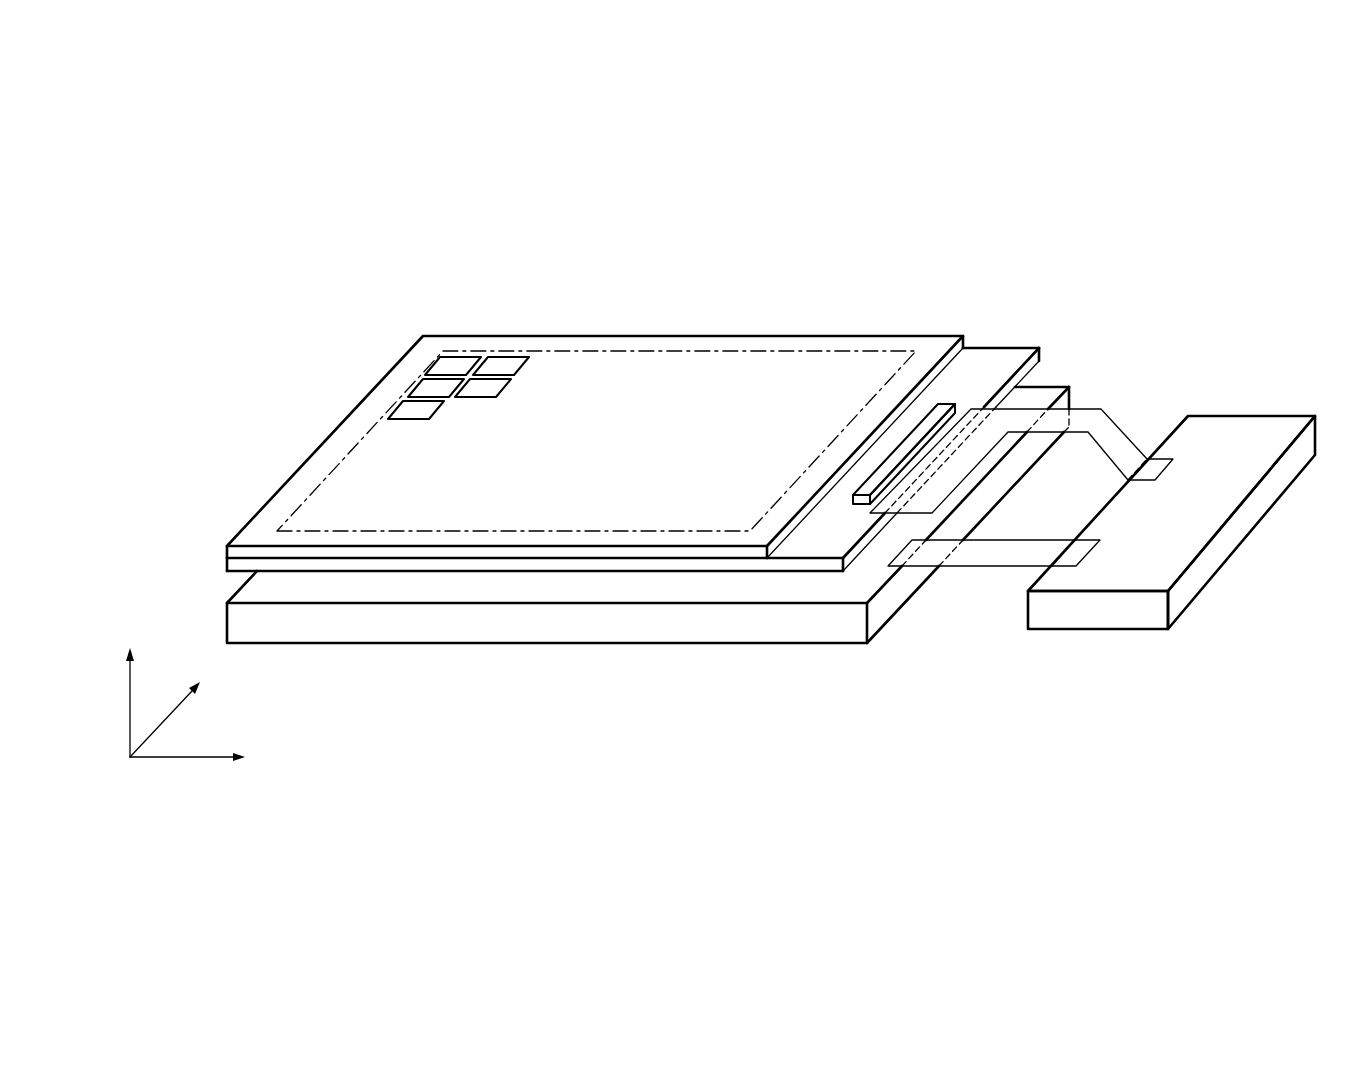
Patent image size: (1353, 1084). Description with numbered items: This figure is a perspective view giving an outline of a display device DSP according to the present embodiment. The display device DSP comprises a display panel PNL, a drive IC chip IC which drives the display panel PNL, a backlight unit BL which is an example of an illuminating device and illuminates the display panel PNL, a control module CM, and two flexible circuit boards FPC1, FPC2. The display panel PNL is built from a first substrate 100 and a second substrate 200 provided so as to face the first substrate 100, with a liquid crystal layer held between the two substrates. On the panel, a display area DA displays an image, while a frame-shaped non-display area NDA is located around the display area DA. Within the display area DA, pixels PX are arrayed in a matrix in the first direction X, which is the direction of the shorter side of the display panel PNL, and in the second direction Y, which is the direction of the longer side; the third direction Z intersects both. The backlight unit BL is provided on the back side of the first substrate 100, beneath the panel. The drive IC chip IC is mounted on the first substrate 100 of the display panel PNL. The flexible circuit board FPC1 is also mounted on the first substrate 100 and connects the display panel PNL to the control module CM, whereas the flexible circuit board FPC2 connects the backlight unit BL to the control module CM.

The display device DSP is at (292, 298).
The display panel PNL is at (218, 553).
The second substrate 200 is at (941, 334).
The first substrate 100 is at (1003, 348).
The display area DA is at (613, 353).
The non-display area NDA is at (683, 345).
The pixels PX is at (433, 362).
The backlight unit BL is at (787, 643).
The drive IC chip IC is at (863, 505).
The flexible circuit board FPC1 is at (1101, 408).
The flexible circuit board FPC2 is at (980, 567).
The control module CM is at (1235, 415).